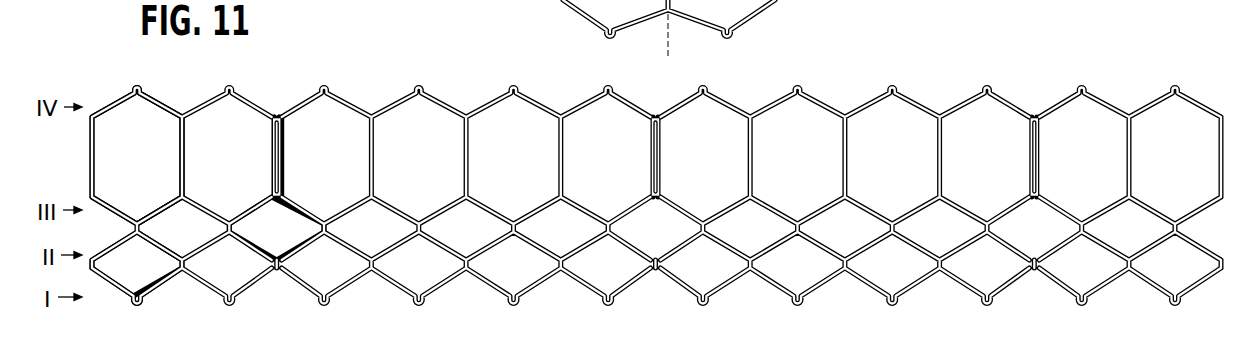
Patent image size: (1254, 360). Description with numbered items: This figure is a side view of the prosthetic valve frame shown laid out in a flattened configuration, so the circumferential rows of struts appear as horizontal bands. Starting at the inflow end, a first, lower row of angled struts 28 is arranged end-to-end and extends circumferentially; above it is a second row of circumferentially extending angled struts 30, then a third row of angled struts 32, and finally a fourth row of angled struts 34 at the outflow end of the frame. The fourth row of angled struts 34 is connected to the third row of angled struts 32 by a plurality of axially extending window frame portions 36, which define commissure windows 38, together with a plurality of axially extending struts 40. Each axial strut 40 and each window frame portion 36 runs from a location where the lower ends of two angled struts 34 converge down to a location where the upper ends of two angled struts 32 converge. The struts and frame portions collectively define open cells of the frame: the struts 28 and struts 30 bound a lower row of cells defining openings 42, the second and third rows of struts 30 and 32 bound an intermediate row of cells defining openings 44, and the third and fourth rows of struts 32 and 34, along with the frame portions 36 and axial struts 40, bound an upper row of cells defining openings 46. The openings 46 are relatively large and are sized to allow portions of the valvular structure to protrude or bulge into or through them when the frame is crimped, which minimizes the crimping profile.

The angled struts 28 is at (161, 285).
The angled struts 30 is at (155, 242).
The angled struts 32 is at (162, 205).
The angled struts 34 is at (155, 101).
The window frame portions 36 is at (287, 155).
The commissure windows 38 is at (277, 135).
The axially extending struts 40 is at (185, 155).
The openings 42 is at (147, 285).
The openings 44 is at (292, 243).
The openings 46 is at (142, 150).